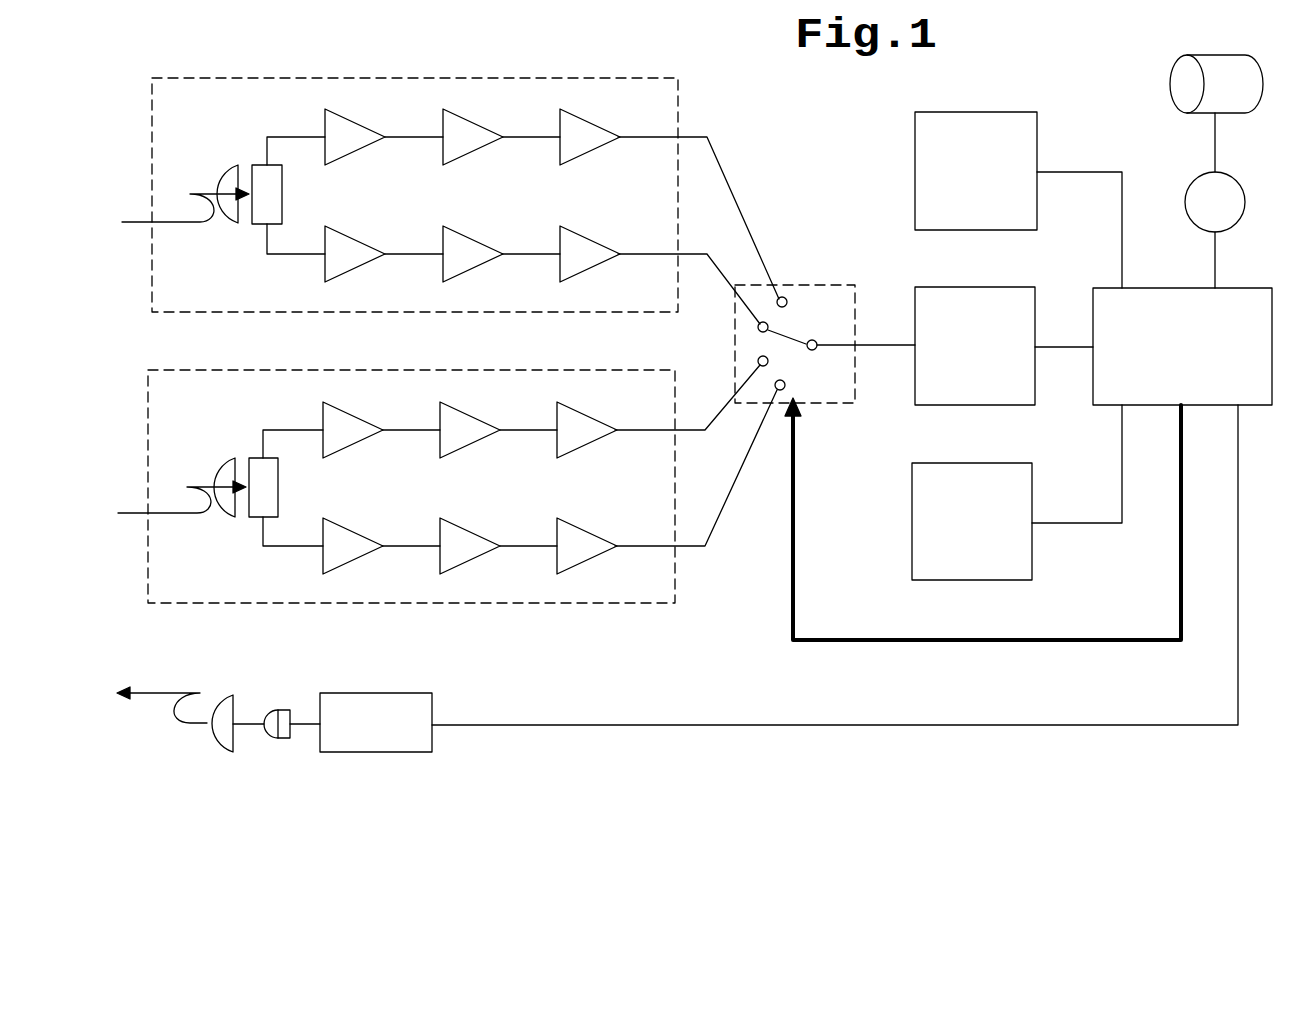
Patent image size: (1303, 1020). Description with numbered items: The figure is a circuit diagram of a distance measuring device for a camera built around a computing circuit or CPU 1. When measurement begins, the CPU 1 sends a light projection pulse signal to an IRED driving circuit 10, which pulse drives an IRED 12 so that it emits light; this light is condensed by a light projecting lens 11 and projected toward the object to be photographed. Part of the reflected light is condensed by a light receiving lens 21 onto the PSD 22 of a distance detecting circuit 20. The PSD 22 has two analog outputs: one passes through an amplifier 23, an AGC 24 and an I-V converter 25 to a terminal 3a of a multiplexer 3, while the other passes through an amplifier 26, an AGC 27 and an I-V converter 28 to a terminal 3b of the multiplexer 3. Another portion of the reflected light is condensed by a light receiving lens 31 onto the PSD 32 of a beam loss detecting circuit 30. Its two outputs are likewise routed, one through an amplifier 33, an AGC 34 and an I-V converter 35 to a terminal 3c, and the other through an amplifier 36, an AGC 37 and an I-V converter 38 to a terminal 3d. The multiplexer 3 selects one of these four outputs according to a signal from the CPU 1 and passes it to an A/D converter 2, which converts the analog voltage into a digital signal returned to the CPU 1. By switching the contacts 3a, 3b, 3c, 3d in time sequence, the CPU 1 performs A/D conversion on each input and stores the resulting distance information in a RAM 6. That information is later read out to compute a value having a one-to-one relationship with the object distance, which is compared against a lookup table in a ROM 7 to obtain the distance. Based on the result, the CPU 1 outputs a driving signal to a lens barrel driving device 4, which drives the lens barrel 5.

The CPU 1 is at (1242, 288).
The A/D converter 2 is at (1035, 318).
The multiplexer 3 is at (802, 348).
The terminal 3a is at (782, 296).
The terminal 3b is at (758, 327).
The terminal 3c is at (758, 363).
The terminal 3d is at (785, 390).
The lens barrel driving device 4 is at (1245, 202).
The lens barrel 5 is at (1247, 113).
The RAM 6 is at (1032, 492).
The ROM 7 is at (1037, 140).
The IRED driving circuit 10 is at (378, 693).
The light projecting lens 11 is at (233, 697).
The IRED 12 is at (280, 708).
The distance detecting circuit 20 is at (540, 78).
The light receiving lens 21 is at (222, 167).
The PSD 22 is at (282, 194).
The amplifier 23 is at (355, 122).
The AGC 24 is at (473, 122).
The I-V converter 25 is at (590, 122).
The amplifier 26 is at (355, 239).
The AGC 27 is at (473, 239).
The I-V converter 28 is at (590, 239).
The beam loss detecting circuit 30 is at (537, 370).
The light receiving lens 31 is at (220, 460).
The PSD 32 is at (278, 487).
The amplifier 33 is at (353, 415).
The AGC 34 is at (470, 415).
The I-V converter 35 is at (587, 415).
The amplifier 36 is at (353, 531).
The AGC 37 is at (470, 531).
The I-V converter 38 is at (587, 531).